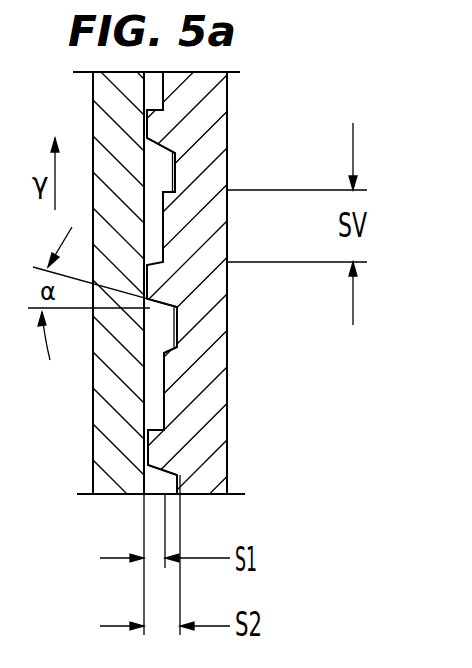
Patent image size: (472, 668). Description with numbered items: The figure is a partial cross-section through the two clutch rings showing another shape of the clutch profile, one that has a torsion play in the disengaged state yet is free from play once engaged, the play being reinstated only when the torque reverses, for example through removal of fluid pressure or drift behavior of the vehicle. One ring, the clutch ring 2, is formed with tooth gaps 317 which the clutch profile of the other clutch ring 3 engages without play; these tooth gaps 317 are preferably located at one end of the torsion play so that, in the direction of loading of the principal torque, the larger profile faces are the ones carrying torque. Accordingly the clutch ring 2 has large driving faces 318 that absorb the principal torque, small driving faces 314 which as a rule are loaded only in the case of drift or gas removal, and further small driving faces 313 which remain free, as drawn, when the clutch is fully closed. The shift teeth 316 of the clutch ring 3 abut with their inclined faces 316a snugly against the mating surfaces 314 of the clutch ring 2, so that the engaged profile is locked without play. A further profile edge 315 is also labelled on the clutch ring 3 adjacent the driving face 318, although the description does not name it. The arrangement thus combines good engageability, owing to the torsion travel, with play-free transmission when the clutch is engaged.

The clutch ring 2 is at (220, 432).
The clutch ring 3 is at (97, 473).
The small driving faces 313 is at (150, 423).
The small driving faces 314 is at (182, 365).
The sealing lip edge 315 is at (145, 442).
The shift teeth 316 is at (172, 162).
The inclined faces 316a is at (178, 170).
The tooth gaps 317 is at (180, 358).
The driving faces 318 is at (163, 140).